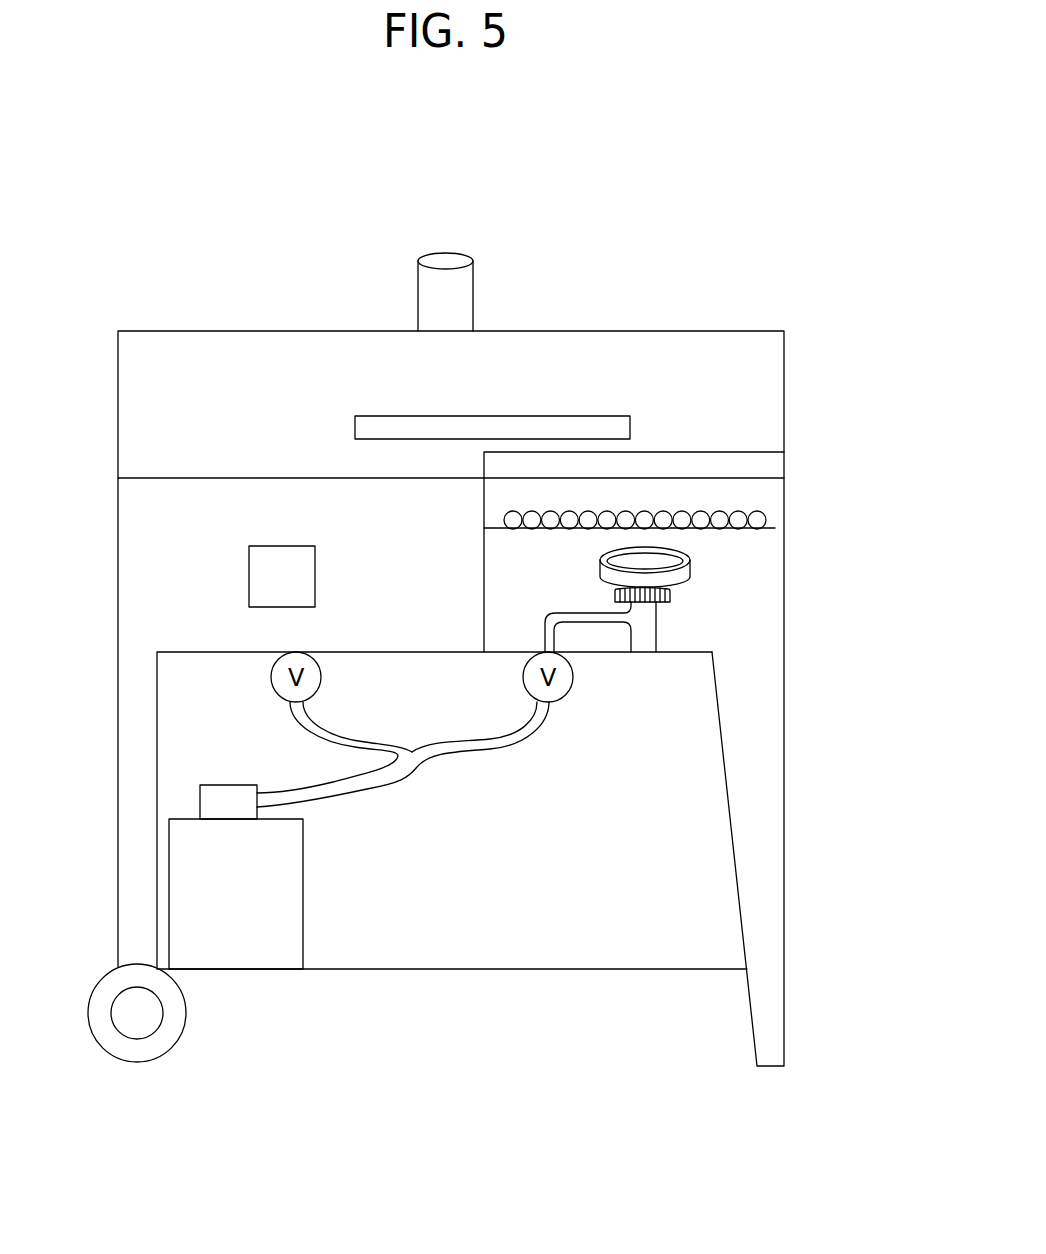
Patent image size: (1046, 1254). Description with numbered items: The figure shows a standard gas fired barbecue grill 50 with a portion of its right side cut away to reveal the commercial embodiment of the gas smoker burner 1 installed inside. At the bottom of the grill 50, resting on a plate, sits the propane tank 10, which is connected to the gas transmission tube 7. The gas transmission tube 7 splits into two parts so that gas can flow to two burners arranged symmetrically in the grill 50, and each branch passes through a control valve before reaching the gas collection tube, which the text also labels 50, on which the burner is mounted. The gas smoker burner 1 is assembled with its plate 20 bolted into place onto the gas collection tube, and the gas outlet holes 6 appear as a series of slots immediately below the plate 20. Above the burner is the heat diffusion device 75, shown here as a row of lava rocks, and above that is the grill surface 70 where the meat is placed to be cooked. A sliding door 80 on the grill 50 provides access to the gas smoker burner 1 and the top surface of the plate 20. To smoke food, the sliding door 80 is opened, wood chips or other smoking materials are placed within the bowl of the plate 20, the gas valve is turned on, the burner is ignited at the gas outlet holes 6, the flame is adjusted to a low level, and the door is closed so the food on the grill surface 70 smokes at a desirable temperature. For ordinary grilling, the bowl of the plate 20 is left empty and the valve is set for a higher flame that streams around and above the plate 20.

The gas fired barbecue grill 50 is at (716, 313).
The grill surface 70 is at (773, 467).
The heat diffusion device 75 is at (767, 513).
The plate 20 is at (688, 562).
The gas outlet holes 6 is at (668, 590).
The gas smoker burner 1 is at (729, 583).
The sliding door 80 is at (248, 568).
The gas transmission tube 7 is at (410, 780).
The propane tank 10 is at (302, 884).